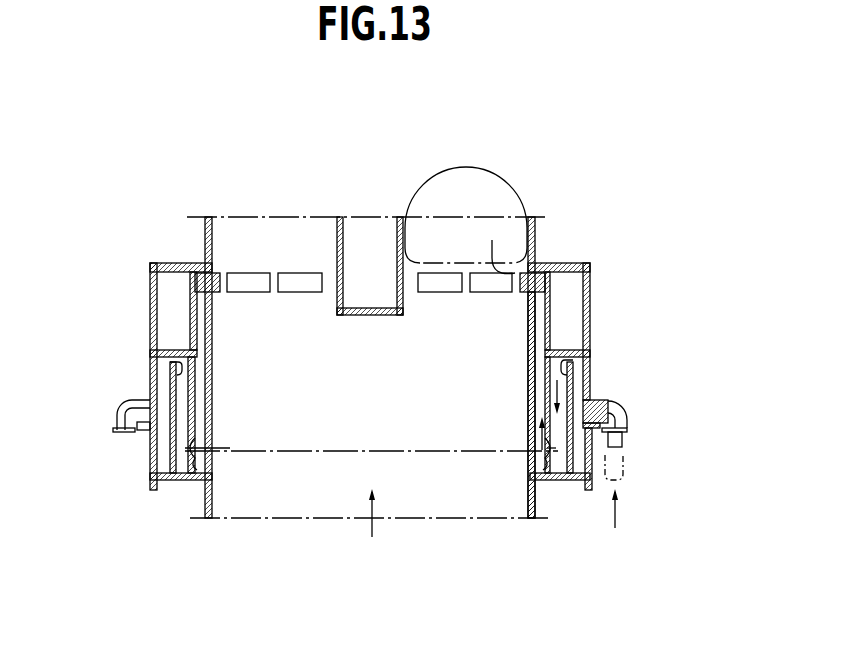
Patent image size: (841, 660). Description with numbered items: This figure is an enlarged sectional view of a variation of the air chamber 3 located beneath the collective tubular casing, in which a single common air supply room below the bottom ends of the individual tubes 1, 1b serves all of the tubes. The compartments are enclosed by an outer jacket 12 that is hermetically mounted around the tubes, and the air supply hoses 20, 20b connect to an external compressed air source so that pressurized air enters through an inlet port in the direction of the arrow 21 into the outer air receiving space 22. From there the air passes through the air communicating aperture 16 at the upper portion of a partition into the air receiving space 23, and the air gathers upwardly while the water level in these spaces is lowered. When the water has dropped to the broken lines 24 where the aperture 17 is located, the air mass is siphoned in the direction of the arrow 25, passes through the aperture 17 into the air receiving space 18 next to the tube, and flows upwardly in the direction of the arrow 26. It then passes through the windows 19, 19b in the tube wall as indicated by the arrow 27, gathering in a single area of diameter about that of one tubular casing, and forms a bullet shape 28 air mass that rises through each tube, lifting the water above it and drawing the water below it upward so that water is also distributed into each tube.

The individual tube 1 is at (207, 240).
The individual tube 1b is at (535, 232).
The air chamber 3 is at (146, 344).
The outer jacket 12 is at (589, 338).
The air communicating aperture 16 is at (572, 366).
The air communication aperture 17 is at (560, 480).
The air receiving space 18 is at (534, 322).
The window 19 is at (248, 278).
The window 19b is at (531, 283).
The air supply hose 20 is at (132, 415).
The air supply hose 20b is at (622, 465).
The arrow 21 is at (616, 513).
The air receiving space 22 is at (175, 382).
The air receiving space 23 is at (183, 420).
The broken lines 24 is at (307, 451).
The arrow 25 is at (625, 430).
The arrow 26 is at (538, 452).
The arrow 27 is at (517, 273).
The bullet shape 28 is at (500, 183).